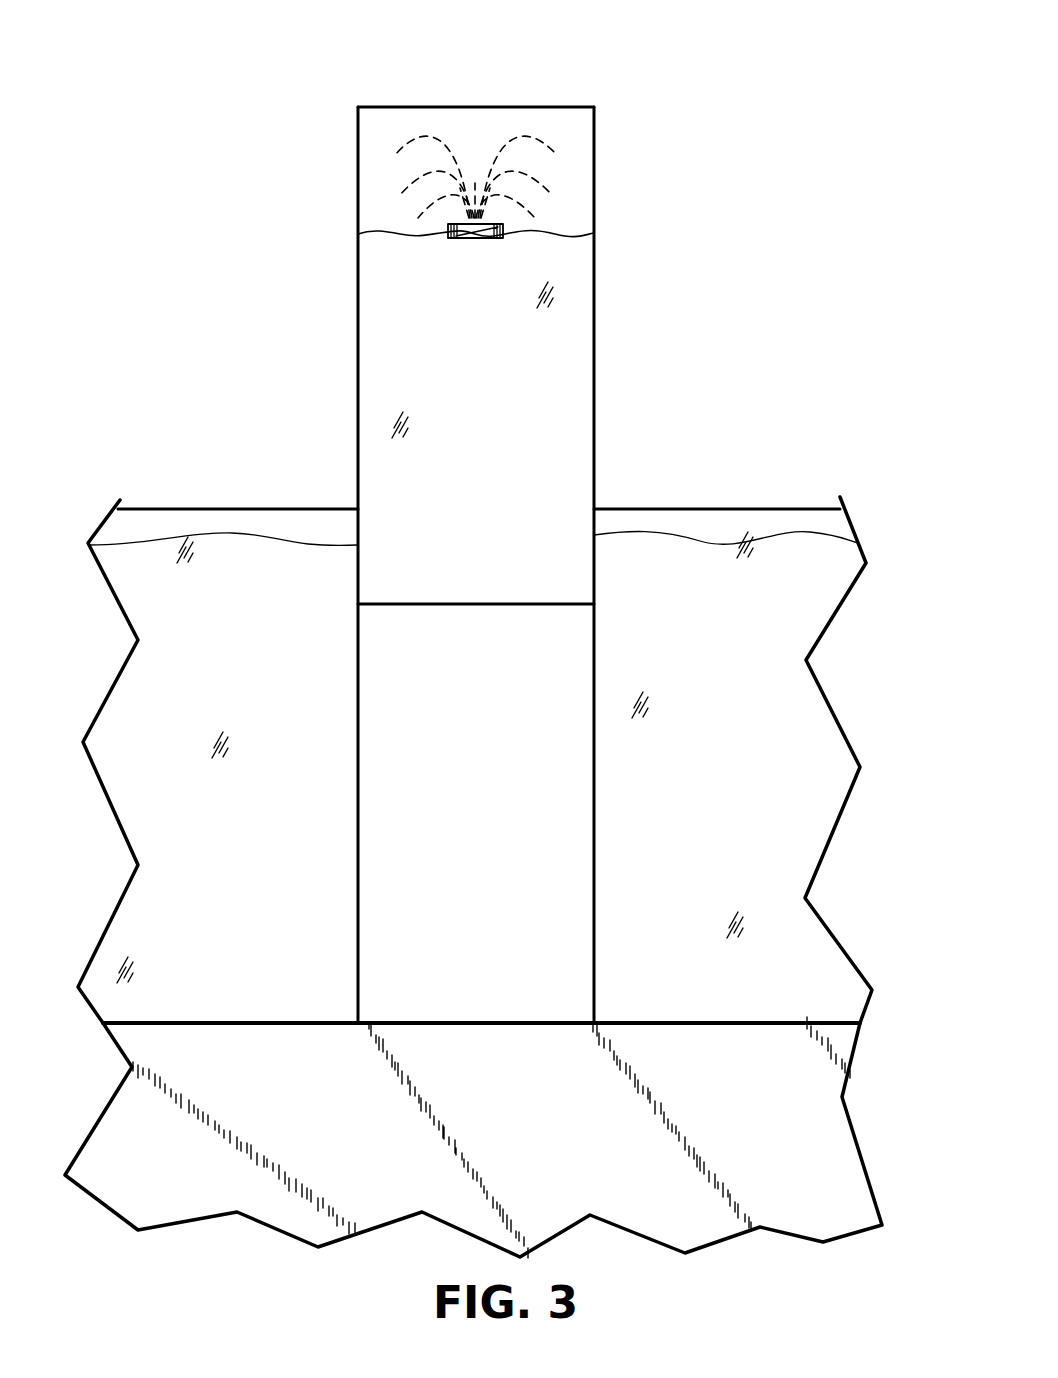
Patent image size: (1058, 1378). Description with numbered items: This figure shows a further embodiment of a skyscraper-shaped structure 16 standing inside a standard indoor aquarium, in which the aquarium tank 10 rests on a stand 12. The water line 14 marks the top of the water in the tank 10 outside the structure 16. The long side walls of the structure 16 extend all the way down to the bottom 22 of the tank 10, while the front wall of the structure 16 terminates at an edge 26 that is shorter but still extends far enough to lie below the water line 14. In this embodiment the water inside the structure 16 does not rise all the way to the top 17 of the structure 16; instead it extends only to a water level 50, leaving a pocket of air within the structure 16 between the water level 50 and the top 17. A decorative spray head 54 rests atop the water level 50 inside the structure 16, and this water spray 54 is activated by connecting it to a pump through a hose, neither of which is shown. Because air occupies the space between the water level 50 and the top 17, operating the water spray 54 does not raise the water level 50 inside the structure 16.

The tank 10 is at (172, 508).
The stand 12 is at (635, 1215).
The water line 14 is at (135, 548).
The structure 16 is at (628, 120).
The top 17 is at (398, 107).
The bottom 22 is at (212, 1023).
The edge 26 is at (458, 605).
The water level 50 is at (567, 234).
The decorative spray head 54 is at (458, 240).